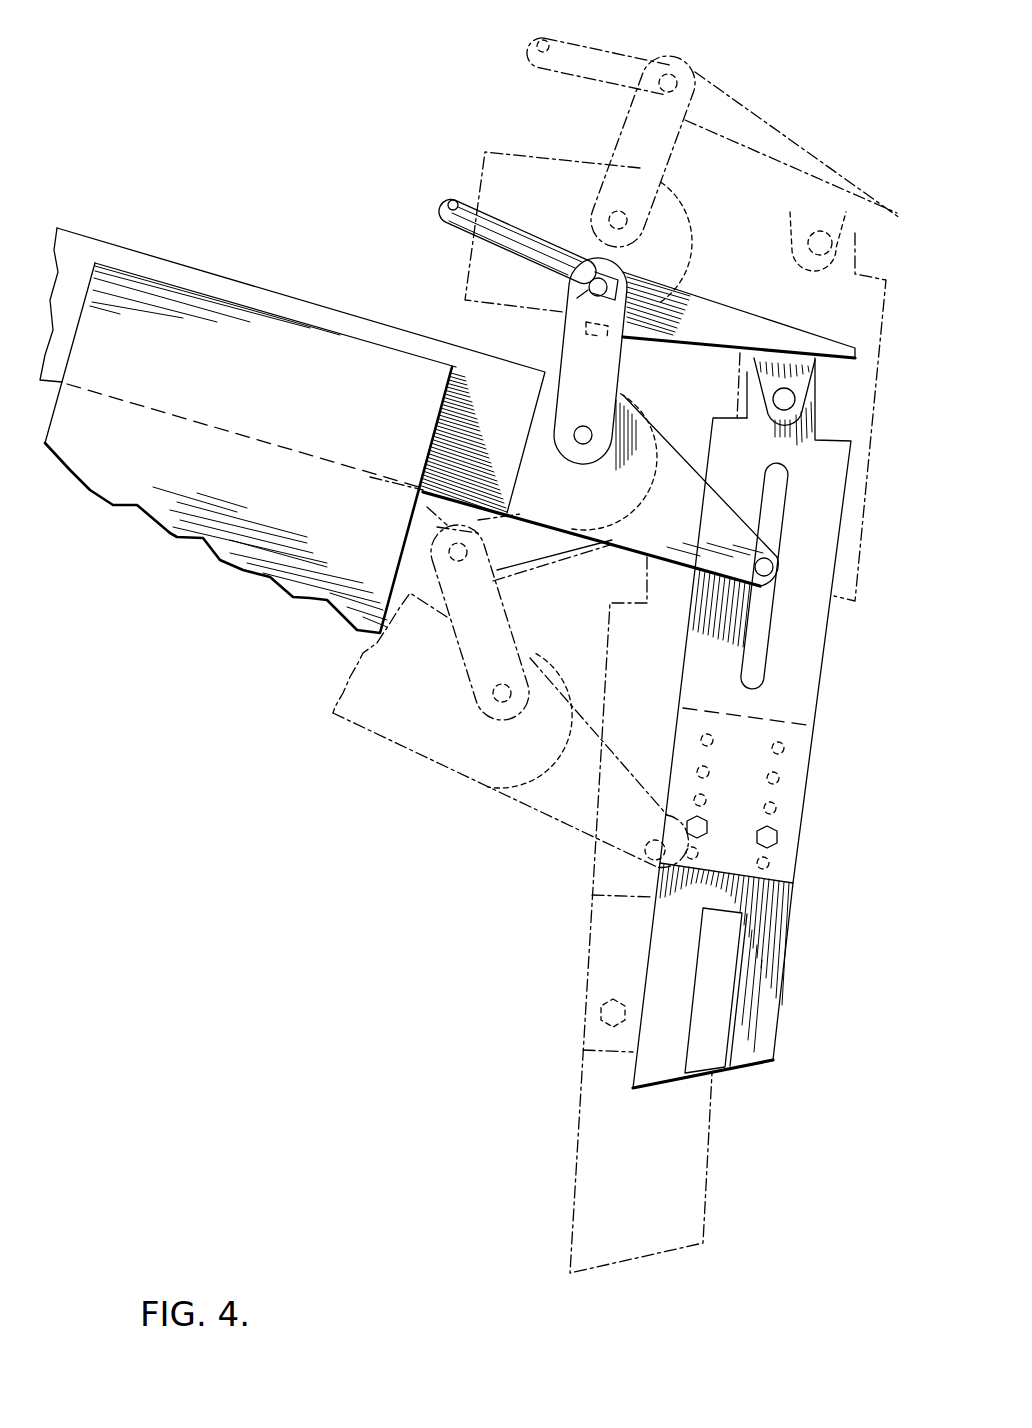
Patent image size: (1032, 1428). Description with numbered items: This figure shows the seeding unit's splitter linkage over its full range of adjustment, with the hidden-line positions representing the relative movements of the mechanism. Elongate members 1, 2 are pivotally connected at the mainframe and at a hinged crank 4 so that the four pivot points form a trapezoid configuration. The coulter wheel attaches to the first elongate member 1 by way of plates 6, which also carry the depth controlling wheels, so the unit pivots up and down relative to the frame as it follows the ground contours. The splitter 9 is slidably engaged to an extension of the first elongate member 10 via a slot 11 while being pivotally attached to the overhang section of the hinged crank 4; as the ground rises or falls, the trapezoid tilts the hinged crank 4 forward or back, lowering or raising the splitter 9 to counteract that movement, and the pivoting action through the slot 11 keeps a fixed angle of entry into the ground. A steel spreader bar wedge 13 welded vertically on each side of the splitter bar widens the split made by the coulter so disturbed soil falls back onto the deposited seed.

The first elongate member 1 is at (173, 265).
The second elongate member 2 is at (537, 50).
The hinged crank 4 is at (760, 117).
The plates 6 is at (223, 543).
The splitter 9 is at (793, 883).
The extension of the first elongate member 10 is at (630, 533).
The slot 11 is at (758, 640).
The spreader bar wedge 13 is at (723, 1023).